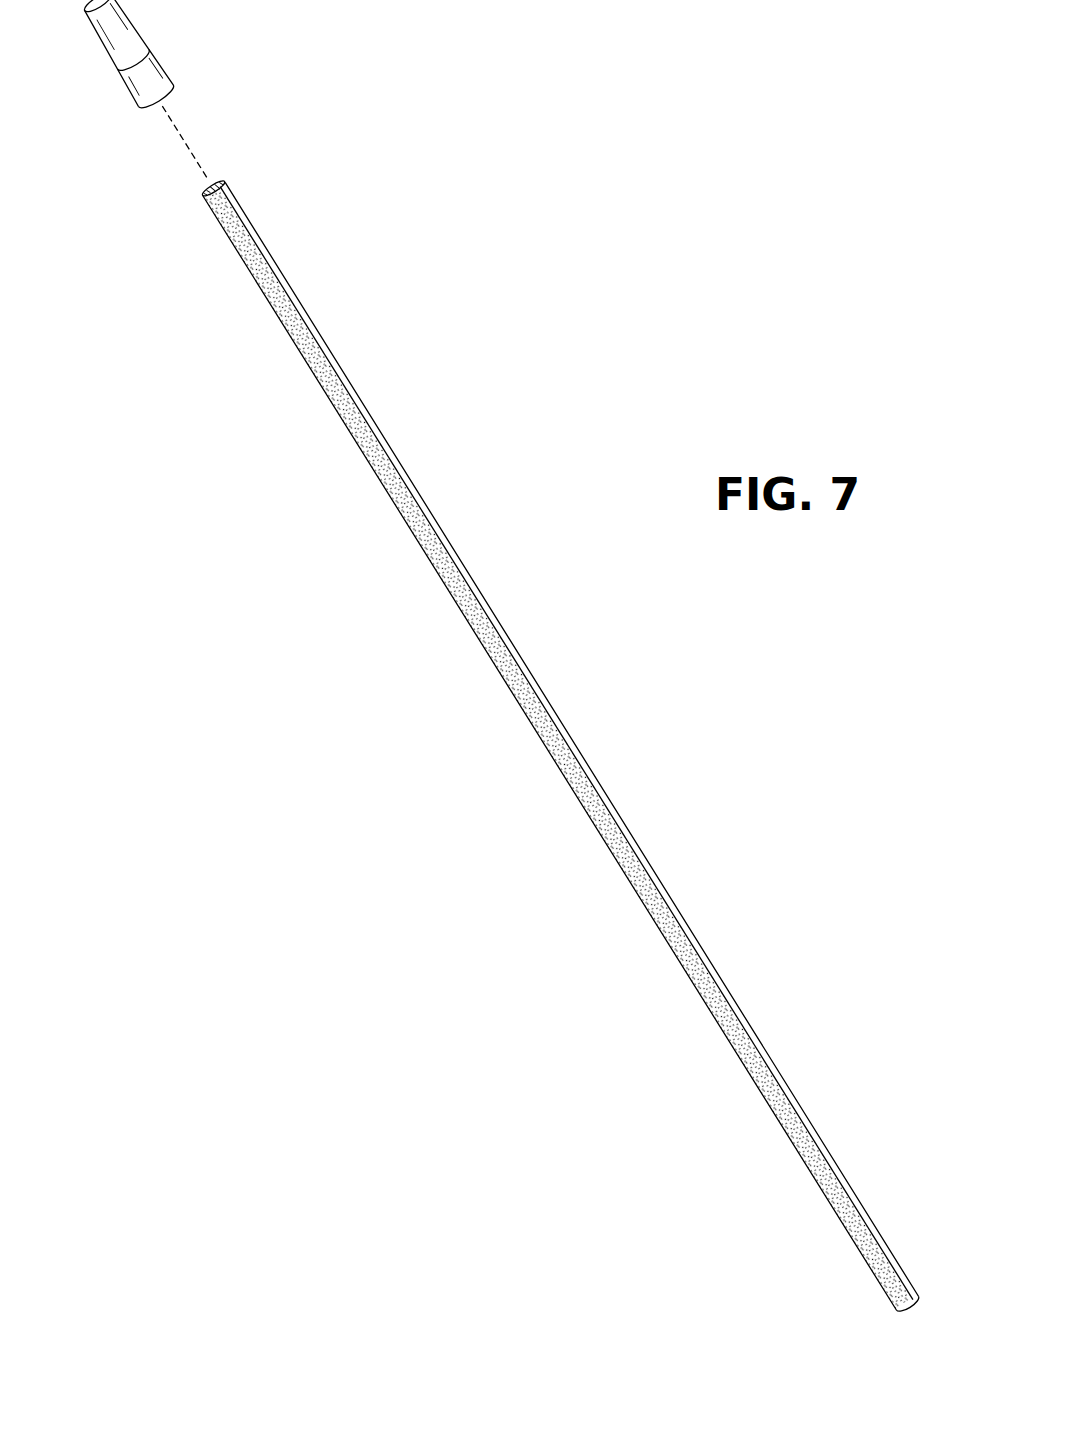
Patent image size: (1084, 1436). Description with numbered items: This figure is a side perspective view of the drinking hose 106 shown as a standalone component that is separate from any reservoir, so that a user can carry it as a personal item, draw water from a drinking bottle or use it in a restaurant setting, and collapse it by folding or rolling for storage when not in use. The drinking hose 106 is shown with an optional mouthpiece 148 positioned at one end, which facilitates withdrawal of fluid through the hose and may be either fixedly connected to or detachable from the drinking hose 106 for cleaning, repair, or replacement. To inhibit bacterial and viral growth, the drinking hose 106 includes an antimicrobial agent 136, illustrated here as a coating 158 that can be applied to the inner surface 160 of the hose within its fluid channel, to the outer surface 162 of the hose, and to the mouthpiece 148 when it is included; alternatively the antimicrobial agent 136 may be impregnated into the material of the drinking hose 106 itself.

The drinking hose 106 is at (551, 734).
The antimicrobial agent 136 is at (562, 748).
The mouthpiece 148 is at (168, 36).
The coating 158 is at (455, 559).
The inner surface 160 is at (207, 190).
The outer surface 162 is at (620, 850).